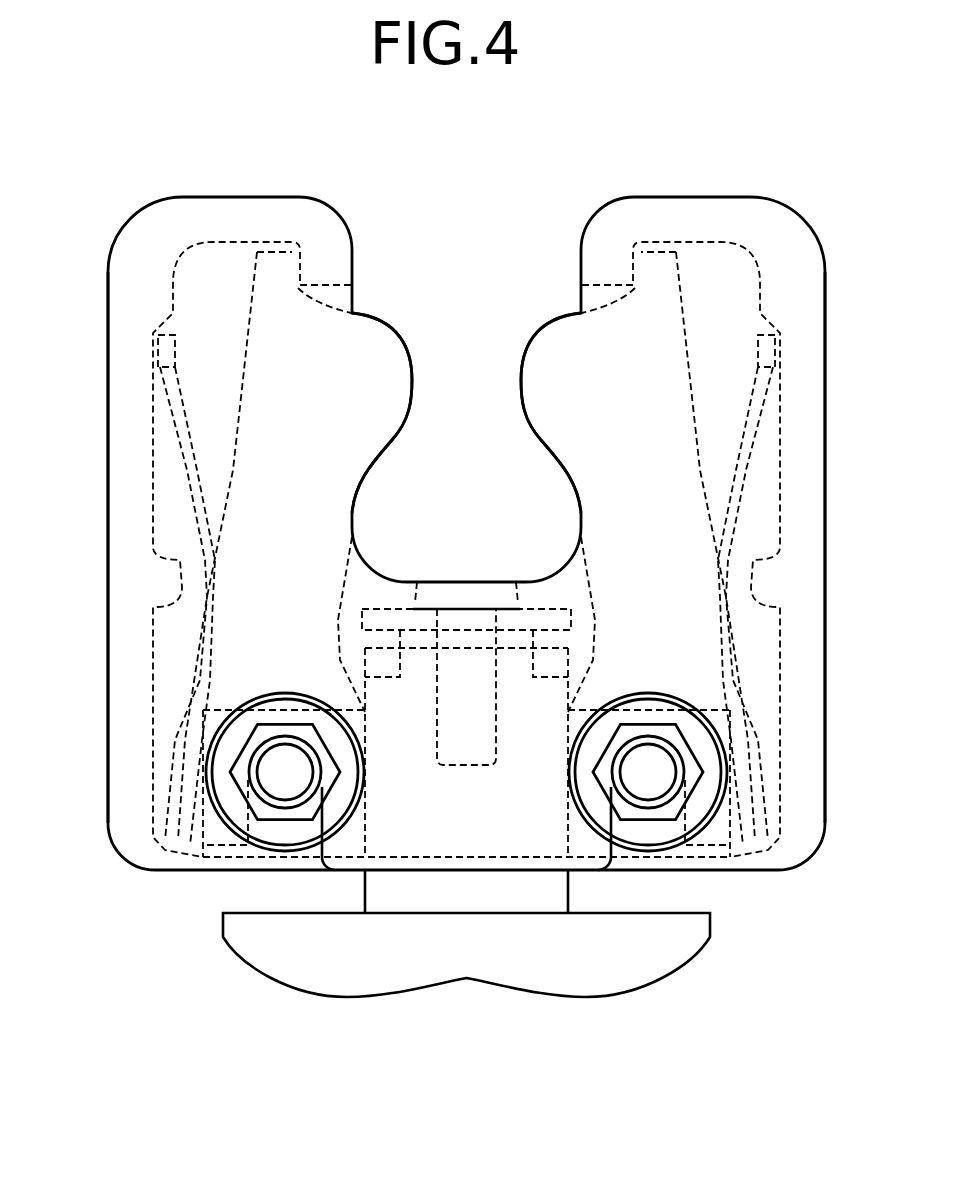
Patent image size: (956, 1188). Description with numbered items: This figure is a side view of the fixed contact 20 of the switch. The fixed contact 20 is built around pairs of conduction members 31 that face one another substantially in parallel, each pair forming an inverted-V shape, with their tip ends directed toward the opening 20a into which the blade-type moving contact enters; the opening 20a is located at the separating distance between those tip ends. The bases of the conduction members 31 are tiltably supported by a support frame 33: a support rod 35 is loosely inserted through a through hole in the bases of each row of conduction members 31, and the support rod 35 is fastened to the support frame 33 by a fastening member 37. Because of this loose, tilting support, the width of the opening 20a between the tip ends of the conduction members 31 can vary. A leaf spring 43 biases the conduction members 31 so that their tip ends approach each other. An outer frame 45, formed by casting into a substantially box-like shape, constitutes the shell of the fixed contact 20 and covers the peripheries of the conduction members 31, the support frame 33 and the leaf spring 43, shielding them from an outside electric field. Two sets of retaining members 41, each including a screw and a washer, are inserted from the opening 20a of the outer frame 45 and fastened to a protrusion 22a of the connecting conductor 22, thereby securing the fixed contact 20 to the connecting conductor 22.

The fixed contact 20 is at (491, 179).
The opening 20a is at (470, 350).
The conduction member 31 is at (385, 353).
The retaining member 41 is at (476, 580).
The protrusion 22a is at (507, 653).
The support frame 33 is at (400, 862).
The connecting conductor 22 is at (447, 962).
The leaf spring 43 is at (180, 477).
The outer frame 45 is at (108, 557).
The fastening member 37 is at (247, 798).
The support rod 35 is at (287, 799).